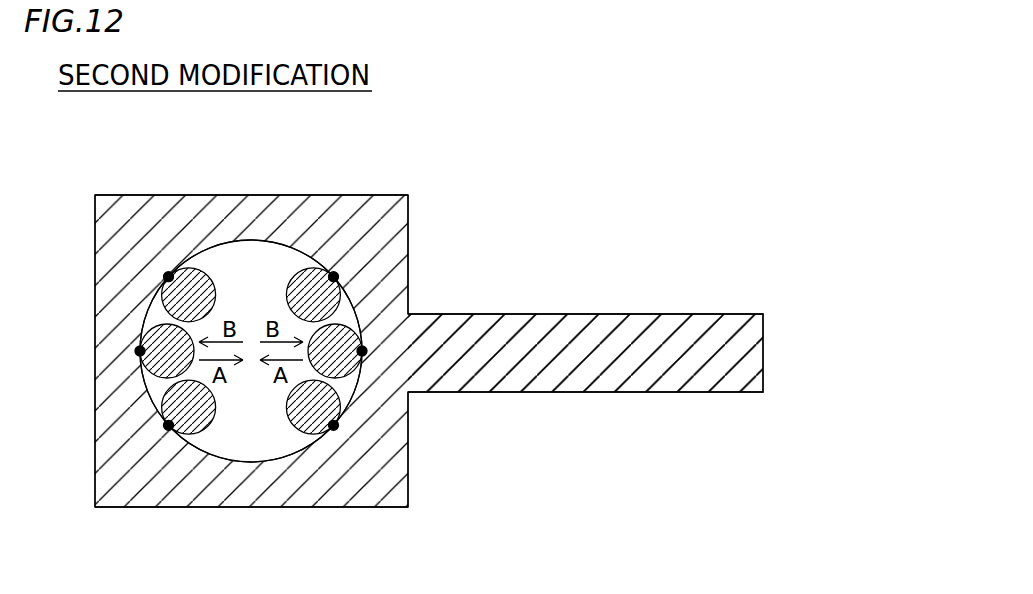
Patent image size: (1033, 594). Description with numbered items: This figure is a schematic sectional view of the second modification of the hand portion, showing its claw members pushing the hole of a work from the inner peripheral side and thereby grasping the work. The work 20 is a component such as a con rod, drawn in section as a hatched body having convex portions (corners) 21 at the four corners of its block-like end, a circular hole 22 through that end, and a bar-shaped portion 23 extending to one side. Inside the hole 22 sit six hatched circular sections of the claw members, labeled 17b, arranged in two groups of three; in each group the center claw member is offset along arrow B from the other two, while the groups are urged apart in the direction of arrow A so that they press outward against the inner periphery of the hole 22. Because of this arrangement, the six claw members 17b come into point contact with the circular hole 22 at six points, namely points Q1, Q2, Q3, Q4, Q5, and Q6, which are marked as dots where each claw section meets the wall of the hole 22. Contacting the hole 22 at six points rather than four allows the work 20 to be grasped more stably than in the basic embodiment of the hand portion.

The work 20 is at (471, 180).
The convex portions (corners) 21 is at (110, 204).
The hole 22 is at (357, 390).
The bar-shaped portion 23 is at (692, 325).
The elastic member 17b is at (210, 286).
The point Q1 is at (149, 268).
The point Q2 is at (122, 354).
The point Q3 is at (147, 430).
The point Q4 is at (355, 435).
The point Q5 is at (382, 355).
The point Q6 is at (356, 271).